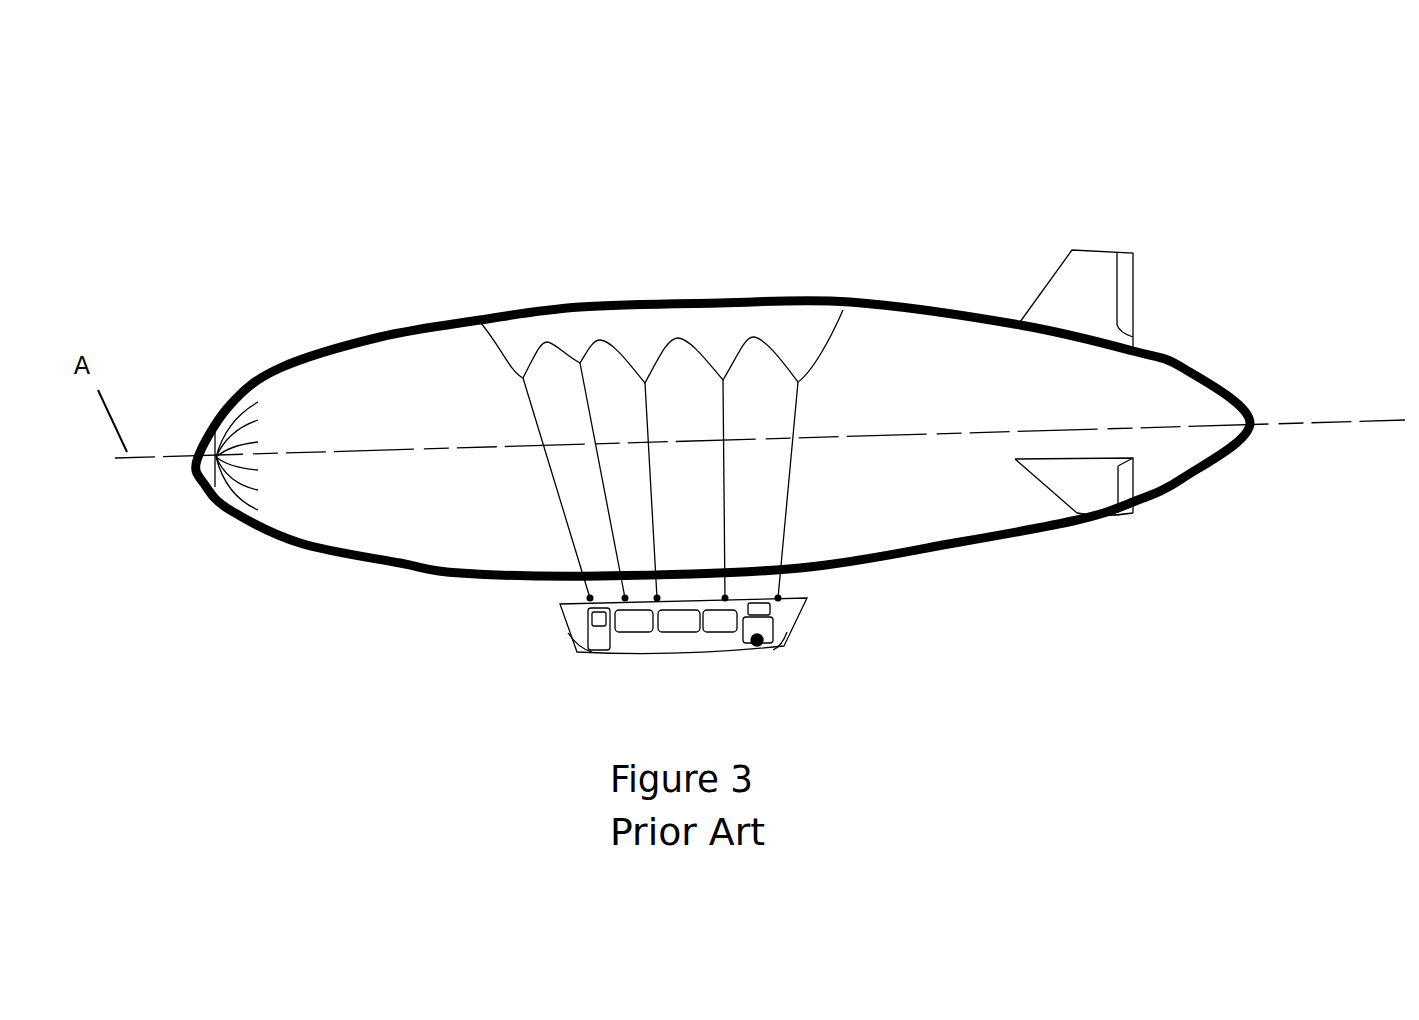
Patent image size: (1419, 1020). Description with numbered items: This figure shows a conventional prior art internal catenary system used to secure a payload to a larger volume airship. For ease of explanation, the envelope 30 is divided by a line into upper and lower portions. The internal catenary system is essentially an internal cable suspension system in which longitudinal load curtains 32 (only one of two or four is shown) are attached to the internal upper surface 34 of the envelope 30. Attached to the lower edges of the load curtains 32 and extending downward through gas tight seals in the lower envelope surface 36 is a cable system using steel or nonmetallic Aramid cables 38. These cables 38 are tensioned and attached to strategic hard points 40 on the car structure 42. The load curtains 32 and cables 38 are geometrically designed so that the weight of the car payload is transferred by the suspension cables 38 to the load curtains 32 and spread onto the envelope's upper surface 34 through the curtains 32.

The envelope 30 is at (307, 230).
The load curtains 32 is at (713, 347).
The internal upper surface 34 is at (1183, 363).
The lower envelope surface 36 is at (1085, 532).
The cables 38 is at (562, 507).
The hard points 40 is at (590, 600).
The car structure 42 is at (810, 612).